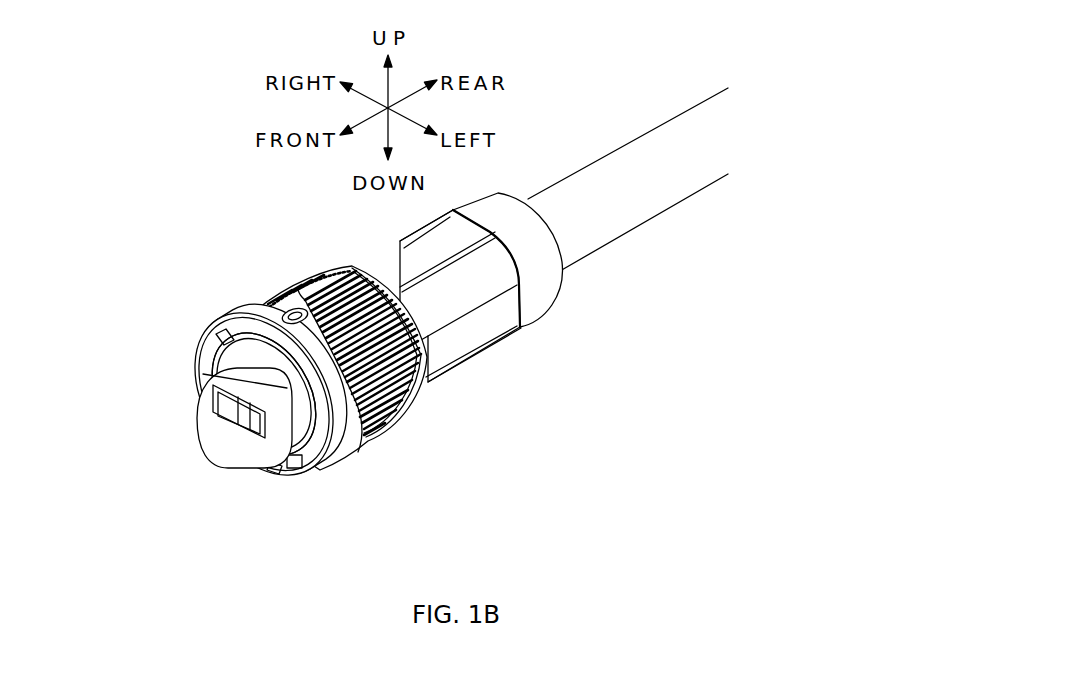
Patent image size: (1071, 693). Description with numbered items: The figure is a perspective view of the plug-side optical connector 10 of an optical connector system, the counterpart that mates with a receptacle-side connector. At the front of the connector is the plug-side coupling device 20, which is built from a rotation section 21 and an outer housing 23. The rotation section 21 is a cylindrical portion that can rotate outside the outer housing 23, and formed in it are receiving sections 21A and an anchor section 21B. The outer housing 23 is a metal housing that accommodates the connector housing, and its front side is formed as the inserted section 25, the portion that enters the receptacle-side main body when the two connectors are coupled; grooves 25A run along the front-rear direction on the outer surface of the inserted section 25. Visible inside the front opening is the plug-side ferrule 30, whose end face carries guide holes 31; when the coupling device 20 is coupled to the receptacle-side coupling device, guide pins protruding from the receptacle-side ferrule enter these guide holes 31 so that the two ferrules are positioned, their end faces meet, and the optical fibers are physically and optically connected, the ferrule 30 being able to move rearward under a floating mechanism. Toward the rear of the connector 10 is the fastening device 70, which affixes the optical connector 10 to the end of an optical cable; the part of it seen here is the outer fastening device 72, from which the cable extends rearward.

The plug-side optical connector 10 is at (401, 318).
The coupling device 20 is at (220, 393).
The rotation section 21 is at (247, 330).
The receiving sections 21A is at (233, 360).
The anchor section 21B is at (291, 312).
The outer housing 23 is at (264, 394).
The inserted section 25 is at (205, 345).
The grooves 25A is at (273, 462).
The ferrule 30 is at (215, 445).
The guide holes 31 is at (205, 420).
The fastening device 70 is at (564, 269).
The outer fastening device 72 is at (497, 323).